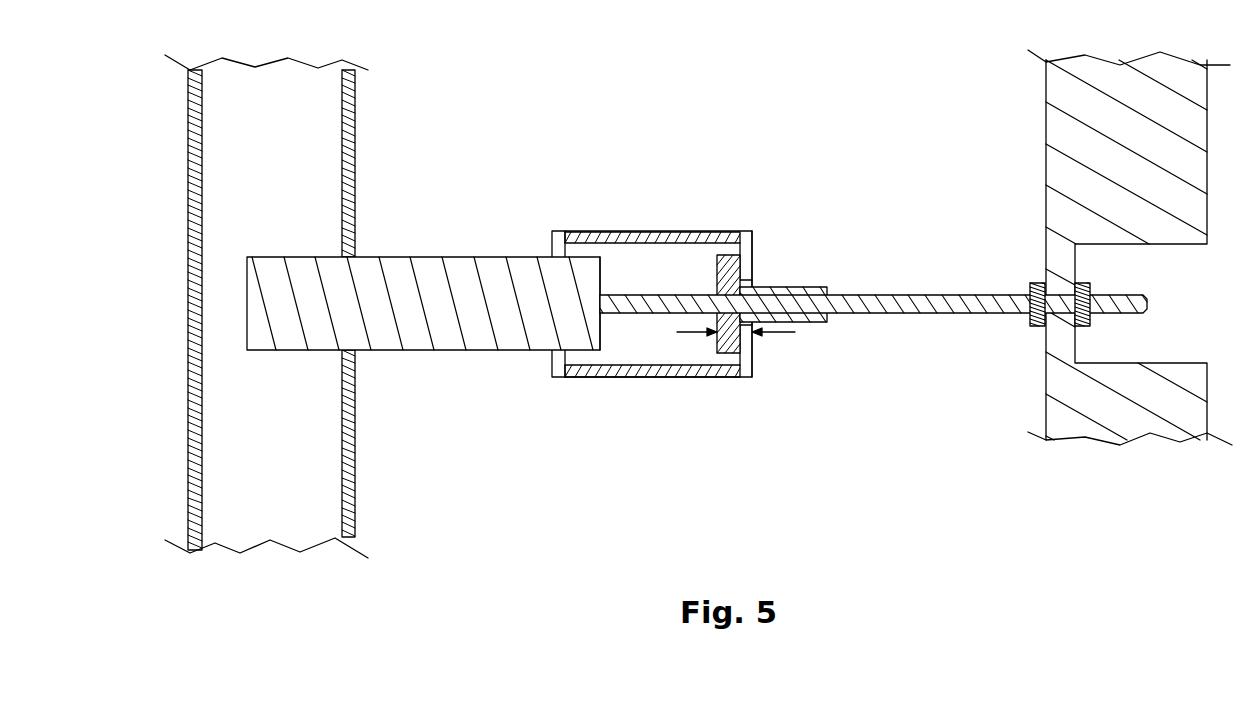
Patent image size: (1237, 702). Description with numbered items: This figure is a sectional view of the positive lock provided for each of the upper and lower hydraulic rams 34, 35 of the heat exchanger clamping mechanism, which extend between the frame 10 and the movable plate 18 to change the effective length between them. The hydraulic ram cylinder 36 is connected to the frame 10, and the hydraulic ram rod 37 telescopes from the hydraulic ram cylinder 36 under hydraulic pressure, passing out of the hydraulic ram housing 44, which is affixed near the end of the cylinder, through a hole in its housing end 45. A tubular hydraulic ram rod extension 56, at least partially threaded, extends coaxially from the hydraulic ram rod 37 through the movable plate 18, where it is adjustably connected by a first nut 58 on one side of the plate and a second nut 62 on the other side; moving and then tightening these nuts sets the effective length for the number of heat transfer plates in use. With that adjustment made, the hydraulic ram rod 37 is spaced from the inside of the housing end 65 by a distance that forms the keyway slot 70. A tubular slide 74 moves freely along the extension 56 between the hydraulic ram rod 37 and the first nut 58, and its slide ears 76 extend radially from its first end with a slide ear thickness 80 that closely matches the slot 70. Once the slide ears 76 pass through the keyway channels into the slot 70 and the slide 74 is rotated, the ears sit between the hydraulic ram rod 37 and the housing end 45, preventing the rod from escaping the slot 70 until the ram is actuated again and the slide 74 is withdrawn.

The frame 10 is at (327, 117).
The movable plate 18 is at (1056, 118).
The upper hydraulic ram 34 is at (423, 353).
The lower hydraulic ram 35 is at (423, 353).
The hydraulic ram cylinder 36 is at (582, 344).
The hydraulic ram rod 37 is at (873, 251).
The hydraulic ram housing 44 is at (694, 306).
The housing end 45 is at (753, 253).
The hydraulic ram rod extension 56 is at (992, 294).
The first nut 58 is at (1036, 328).
The second nut 62 is at (1092, 285).
The inside of the housing end 65 is at (736, 362).
The keyway slot 70 is at (712, 284).
The tubular slide 74 is at (807, 324).
The slide ears 76 is at (717, 277).
The slide ear thickness 80 is at (683, 333).